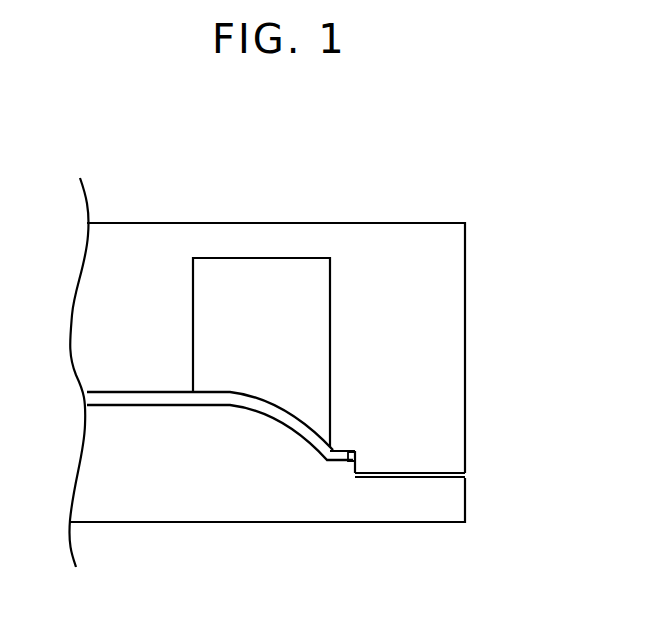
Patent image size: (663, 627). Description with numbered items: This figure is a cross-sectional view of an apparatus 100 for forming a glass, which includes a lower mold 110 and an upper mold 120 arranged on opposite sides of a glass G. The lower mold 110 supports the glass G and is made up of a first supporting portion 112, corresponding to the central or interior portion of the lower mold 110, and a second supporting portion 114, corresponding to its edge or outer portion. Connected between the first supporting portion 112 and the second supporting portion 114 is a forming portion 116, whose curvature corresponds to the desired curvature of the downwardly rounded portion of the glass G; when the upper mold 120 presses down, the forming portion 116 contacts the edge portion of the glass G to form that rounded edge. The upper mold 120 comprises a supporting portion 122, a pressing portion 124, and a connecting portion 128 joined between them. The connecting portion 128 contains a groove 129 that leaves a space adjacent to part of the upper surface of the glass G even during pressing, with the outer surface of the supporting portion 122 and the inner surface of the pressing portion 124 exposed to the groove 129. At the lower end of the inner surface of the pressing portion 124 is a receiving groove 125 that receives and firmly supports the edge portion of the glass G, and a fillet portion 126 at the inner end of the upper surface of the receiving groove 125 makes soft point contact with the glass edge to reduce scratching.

The apparatus for forming a glass 100 is at (80, 148).
The lower mold 110 is at (177, 577).
The first supporting portion 112 is at (195, 448).
The second supporting portion 114 is at (403, 511).
The forming portion 116 is at (308, 436).
The glass G is at (132, 398).
The upper mold 120 is at (142, 167).
The supporting portion 122 is at (155, 292).
The pressing portion 124 is at (363, 292).
The connecting portion 128 is at (265, 240).
The groove 129 is at (306, 363).
The fillet portion 126 is at (336, 446).
The receiving groove 125 is at (356, 456).